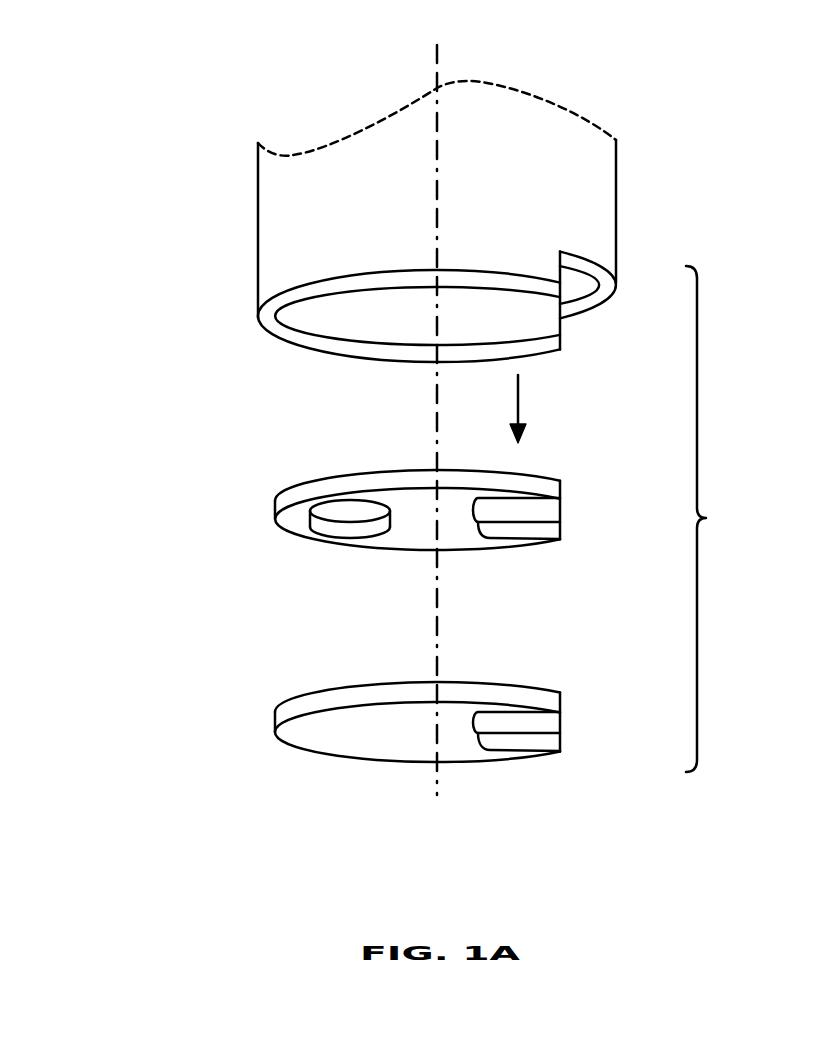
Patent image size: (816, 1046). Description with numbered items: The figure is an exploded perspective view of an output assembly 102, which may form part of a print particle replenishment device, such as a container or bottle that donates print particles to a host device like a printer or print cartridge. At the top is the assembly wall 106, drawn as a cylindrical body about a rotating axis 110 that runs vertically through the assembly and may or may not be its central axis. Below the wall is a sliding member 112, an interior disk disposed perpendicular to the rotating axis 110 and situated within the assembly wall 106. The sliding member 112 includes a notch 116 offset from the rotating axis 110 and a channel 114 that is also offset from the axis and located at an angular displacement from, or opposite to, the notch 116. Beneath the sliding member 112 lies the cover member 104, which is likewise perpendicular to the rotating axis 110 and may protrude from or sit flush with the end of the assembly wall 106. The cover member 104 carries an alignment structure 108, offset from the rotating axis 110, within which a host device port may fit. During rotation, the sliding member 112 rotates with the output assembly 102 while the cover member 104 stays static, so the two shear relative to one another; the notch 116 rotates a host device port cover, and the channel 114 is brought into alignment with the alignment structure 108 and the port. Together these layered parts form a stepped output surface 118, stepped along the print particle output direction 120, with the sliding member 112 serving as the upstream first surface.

The output assembly 102 is at (224, 96).
The cover member 104 is at (275, 725).
The assembly wall 106 is at (616, 203).
The alignment structure 108 is at (480, 720).
The rotating axis 110 is at (437, 402).
The sliding member 112 is at (275, 513).
The channel 114 is at (320, 532).
The notch 116 is at (480, 510).
The stepped output surface 118 is at (742, 519).
The print particle output direction 120 is at (518, 400).